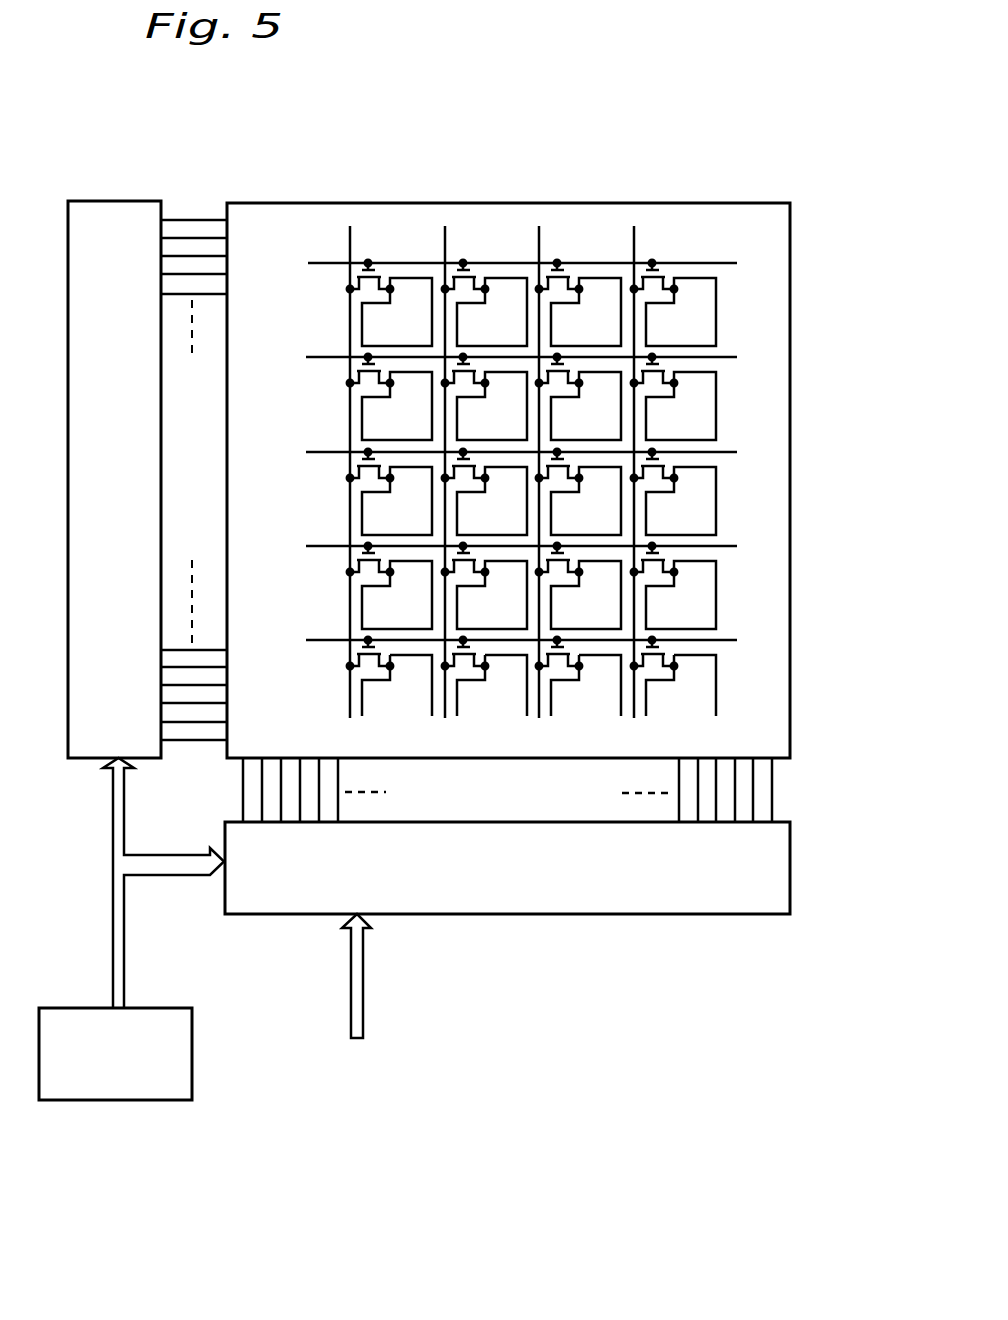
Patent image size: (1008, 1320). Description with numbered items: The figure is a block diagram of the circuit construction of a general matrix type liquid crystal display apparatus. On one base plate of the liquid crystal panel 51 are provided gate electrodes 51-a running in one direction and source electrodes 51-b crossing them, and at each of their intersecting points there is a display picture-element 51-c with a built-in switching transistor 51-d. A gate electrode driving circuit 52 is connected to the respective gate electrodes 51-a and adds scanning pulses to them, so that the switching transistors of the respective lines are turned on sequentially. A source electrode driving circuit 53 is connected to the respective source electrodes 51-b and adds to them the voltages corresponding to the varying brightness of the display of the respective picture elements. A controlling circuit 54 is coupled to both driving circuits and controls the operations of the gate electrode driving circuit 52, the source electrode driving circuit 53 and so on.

The liquid crystal panel 51 is at (588, 203).
The gate electrode 51-a is at (325, 263).
The source electrode 51-b is at (446, 245).
The display picture-element 51-c is at (385, 315).
The switching transistor 51-d is at (374, 285).
The gate electrode driving circuit 52 is at (107, 235).
The source electrode driving circuit 53 is at (510, 897).
The controlling circuit 54 is at (122, 1088).